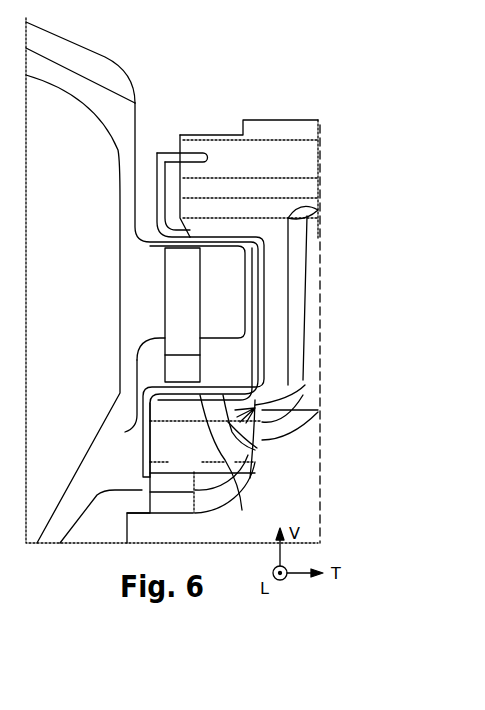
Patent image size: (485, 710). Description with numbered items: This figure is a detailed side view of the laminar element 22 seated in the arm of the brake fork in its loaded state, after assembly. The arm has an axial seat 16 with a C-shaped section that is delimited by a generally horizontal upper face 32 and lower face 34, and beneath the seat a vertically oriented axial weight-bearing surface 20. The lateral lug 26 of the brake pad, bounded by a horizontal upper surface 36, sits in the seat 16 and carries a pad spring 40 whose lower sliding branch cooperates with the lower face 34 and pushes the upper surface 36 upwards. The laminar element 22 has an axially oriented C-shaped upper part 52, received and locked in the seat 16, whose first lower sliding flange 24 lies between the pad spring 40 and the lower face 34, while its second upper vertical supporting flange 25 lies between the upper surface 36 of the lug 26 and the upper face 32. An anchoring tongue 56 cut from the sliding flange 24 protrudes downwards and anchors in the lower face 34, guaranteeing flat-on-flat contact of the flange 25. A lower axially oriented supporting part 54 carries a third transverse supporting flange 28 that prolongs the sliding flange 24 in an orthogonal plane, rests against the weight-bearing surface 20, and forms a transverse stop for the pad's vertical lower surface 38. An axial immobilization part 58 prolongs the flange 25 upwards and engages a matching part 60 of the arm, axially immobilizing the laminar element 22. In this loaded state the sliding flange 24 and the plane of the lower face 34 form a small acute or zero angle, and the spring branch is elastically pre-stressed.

The axial seat 16 is at (274, 306).
The axial weight-bearing surface 20 is at (155, 450).
The laminar element 22 is at (158, 153).
The first lower sliding flange 24 is at (255, 477).
The second upper vertical supporting flange 25 is at (165, 270).
The lug 26 is at (220, 305).
The third transverse supporting flange 28 is at (143, 458).
The upper face 32 is at (222, 237).
The lower face 34 is at (178, 405).
The upper surface 36 is at (155, 252).
The lower surface 38 is at (133, 430).
The pad spring 40 is at (168, 288).
The upper part 52 is at (240, 349).
The lower axially oriented supporting part 54 is at (128, 443).
The anchoring tongue 56 is at (257, 445).
The axial immobilization part 58 is at (183, 158).
The matching part 60 is at (180, 165).